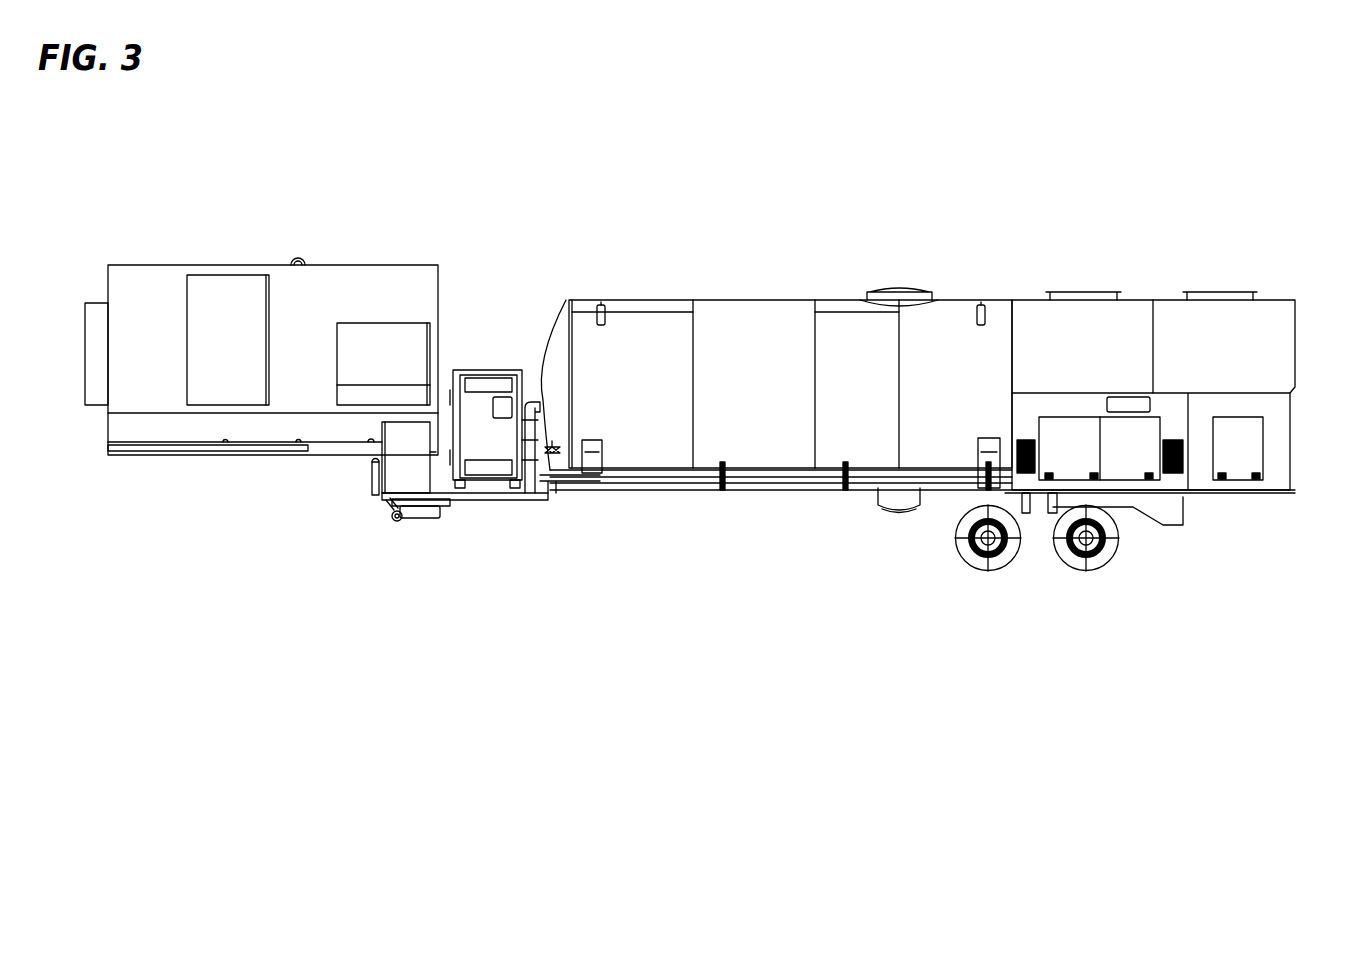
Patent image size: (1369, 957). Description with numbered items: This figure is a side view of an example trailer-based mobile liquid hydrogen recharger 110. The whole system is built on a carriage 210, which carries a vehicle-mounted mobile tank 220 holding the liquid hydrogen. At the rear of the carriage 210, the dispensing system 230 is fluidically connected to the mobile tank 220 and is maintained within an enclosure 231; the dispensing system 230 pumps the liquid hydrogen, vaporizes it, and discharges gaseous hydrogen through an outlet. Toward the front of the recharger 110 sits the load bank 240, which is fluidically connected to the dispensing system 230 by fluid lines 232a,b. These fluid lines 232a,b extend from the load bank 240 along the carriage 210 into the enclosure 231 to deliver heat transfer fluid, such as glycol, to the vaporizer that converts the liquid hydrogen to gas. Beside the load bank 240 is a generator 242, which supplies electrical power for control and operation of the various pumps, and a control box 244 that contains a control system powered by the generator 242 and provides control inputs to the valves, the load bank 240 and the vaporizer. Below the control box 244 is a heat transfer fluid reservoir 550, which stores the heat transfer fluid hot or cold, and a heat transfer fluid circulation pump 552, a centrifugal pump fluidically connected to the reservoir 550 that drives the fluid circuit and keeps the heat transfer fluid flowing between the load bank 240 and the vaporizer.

The mobile liquid hydrogen recharger 110 is at (1176, 169).
The carriage 210 is at (789, 517).
The mobile tank 220 is at (773, 307).
The dispensing system 230 is at (1314, 338).
The enclosure 231 is at (1253, 312).
The fluid lines 232a,b is at (657, 483).
The load bank 240 is at (478, 366).
The generator 242 is at (345, 290).
The control box 244 is at (387, 470).
The heat transfer fluid reservoir 550 is at (436, 518).
The heat transfer fluid circulation pump 552 is at (393, 516).